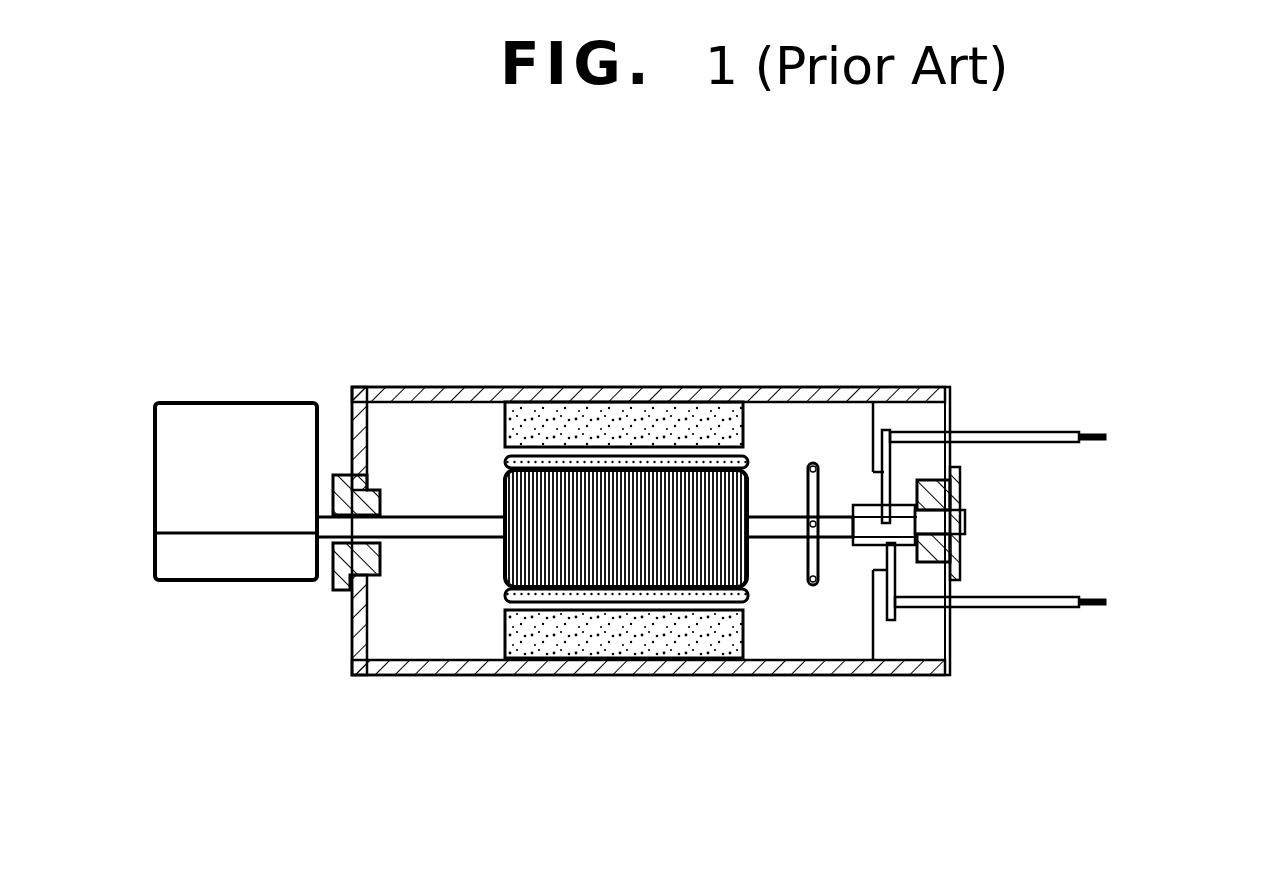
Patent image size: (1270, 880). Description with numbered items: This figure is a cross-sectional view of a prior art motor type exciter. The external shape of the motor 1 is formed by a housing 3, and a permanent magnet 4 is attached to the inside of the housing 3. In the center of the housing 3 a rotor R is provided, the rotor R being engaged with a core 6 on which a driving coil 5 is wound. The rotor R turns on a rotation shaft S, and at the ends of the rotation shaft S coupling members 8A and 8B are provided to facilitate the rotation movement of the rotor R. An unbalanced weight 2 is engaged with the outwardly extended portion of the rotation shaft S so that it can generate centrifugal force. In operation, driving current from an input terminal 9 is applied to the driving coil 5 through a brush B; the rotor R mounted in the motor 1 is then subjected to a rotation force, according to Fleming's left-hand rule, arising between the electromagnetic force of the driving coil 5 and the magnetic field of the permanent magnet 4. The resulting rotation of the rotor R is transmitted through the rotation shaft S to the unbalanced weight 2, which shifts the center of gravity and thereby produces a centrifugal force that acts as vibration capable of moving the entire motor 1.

The motor 1 is at (850, 691).
The unbalanced weight 2 is at (264, 403).
The housing 3 is at (815, 387).
The permanent magnet 4 is at (628, 425).
The driving coil 5 is at (505, 457).
The core 6 is at (523, 552).
The coupling member 8A is at (960, 495).
The coupling member 8B is at (333, 575).
The input terminal 9 is at (1033, 432).
The rotation shaft S is at (400, 520).
The rotor R is at (760, 484).
The brush B is at (864, 540).